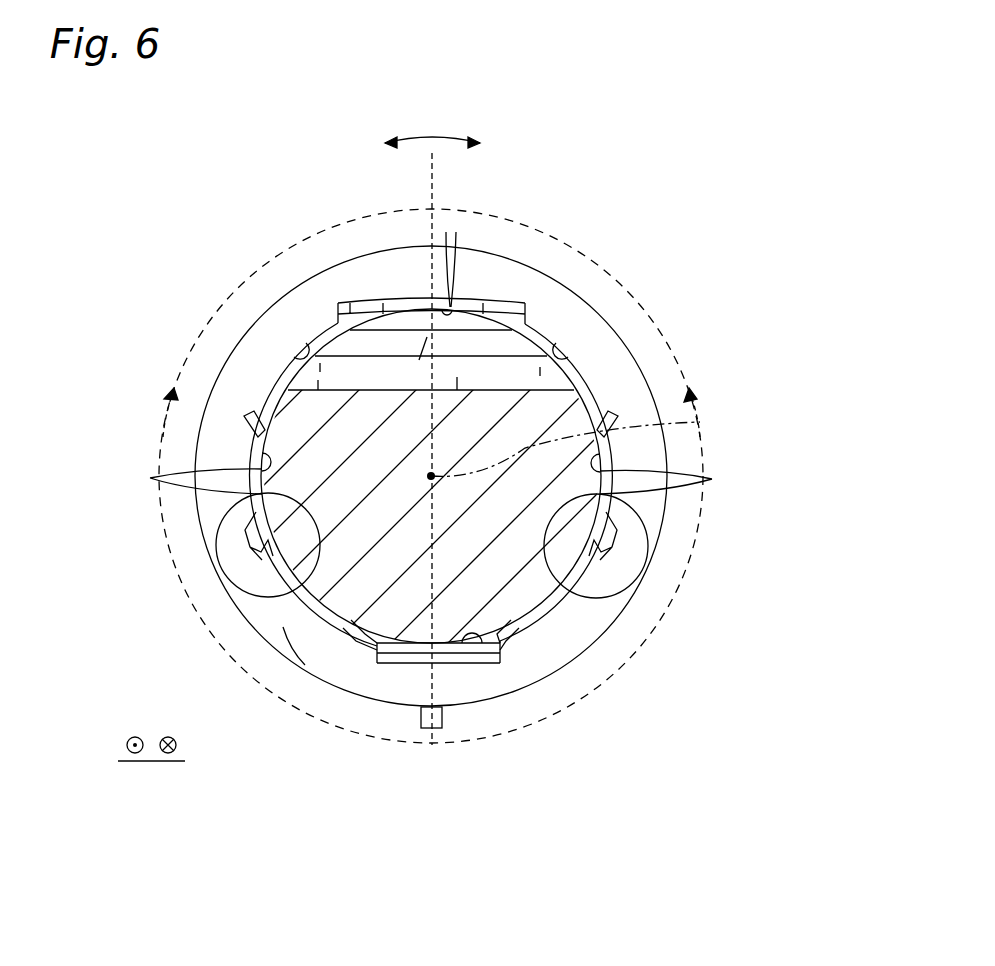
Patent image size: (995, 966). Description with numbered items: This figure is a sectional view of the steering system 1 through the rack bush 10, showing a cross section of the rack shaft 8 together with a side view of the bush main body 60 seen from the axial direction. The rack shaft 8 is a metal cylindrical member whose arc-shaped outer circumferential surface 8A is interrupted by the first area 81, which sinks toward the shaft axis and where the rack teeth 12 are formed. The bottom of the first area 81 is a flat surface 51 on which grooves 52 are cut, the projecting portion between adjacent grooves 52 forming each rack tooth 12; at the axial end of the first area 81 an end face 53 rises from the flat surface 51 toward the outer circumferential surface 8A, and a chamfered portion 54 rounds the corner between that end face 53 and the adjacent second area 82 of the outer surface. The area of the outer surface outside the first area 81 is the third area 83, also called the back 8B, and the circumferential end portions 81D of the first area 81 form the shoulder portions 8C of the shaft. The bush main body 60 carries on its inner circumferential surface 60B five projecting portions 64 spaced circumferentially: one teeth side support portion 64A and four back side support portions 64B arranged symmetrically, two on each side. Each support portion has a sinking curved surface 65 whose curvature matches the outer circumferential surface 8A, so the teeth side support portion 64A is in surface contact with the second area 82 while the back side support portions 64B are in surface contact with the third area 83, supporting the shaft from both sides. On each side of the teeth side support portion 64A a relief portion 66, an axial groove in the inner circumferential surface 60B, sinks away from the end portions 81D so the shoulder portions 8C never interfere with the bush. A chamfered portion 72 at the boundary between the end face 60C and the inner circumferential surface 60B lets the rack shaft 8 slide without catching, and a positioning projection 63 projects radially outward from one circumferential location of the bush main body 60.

The steering system 1 is at (621, 285).
The rack shaft 8 is at (328, 622).
The outer circumferential surface 8A is at (541, 628).
The back 8B is at (363, 653).
The shoulder portion 8C is at (303, 380).
The rack bush 10 is at (667, 512).
The rack teeth 12 is at (318, 380).
The flat surface 51 is at (383, 390).
The grooves 52 is at (560, 380).
The end face 53 is at (407, 343).
The chamfered portion 54 is at (408, 415).
The bush main body 60 is at (498, 476).
The inner circumferential surface 60B is at (488, 640).
The end face 60C is at (283, 627).
The positioning projection 63 is at (433, 728).
The projecting portions 64 is at (430, 426).
The teeth side support portion 64A is at (498, 305).
The back side support portions 64B is at (283, 587).
The sinking curved surface 65 is at (431, 348).
The relief portion 66 is at (298, 343).
The chamfered portion 72 is at (405, 660).
The first area 81 is at (457, 377).
The end portions 81D is at (320, 363).
The second area 82 is at (403, 340).
The third area 83 is at (560, 592).